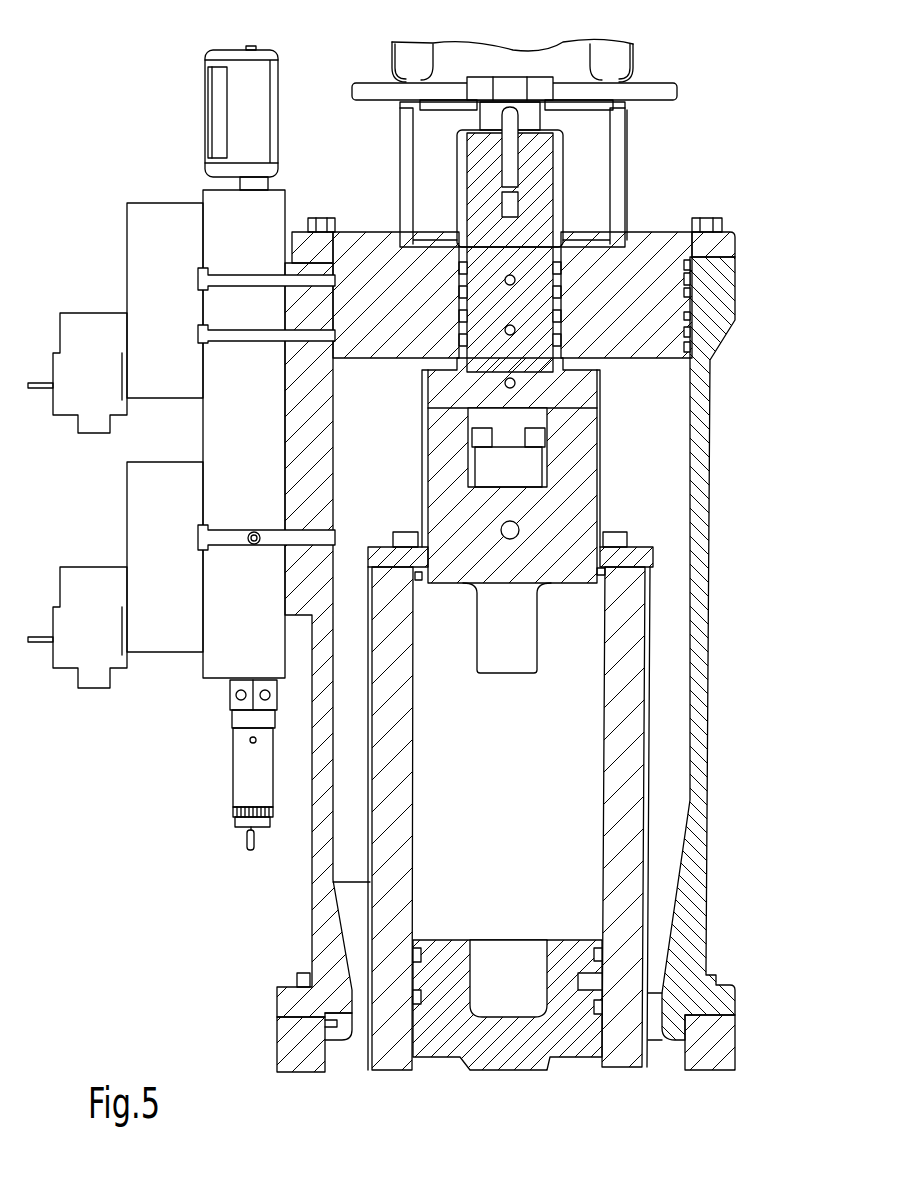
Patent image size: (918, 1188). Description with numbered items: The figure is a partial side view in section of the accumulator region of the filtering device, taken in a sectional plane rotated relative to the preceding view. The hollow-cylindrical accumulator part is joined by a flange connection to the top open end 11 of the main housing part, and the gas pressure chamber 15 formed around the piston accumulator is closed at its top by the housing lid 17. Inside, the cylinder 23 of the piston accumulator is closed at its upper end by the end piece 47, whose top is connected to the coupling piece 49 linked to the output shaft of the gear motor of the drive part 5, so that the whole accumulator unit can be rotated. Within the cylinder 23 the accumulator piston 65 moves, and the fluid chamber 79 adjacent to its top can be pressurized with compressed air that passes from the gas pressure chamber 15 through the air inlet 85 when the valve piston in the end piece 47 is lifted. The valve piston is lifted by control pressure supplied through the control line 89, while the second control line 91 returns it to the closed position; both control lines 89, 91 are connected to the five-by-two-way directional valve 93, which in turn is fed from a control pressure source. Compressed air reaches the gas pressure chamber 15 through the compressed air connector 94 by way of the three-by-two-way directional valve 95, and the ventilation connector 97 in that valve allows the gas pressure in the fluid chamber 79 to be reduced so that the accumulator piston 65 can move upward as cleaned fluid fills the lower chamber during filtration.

The drive part 5 is at (450, 70).
The coupling piece 49 is at (538, 172).
The housing lid 17 is at (658, 240).
The gas pressure chamber 15 is at (642, 432).
The end piece 47 is at (582, 472).
The air inlet 85 is at (517, 528).
The fluid chamber 79 is at (552, 652).
The cylinder 23 is at (627, 718).
The accumulator piston 65 is at (567, 957).
The top open end 11 is at (710, 1017).
The compressed air connector 94 is at (307, 538).
The 5/2-way valve 93 is at (155, 225).
The 3/2-way valve 95 is at (153, 512).
The second control line 91 is at (313, 280).
The control line 89 is at (300, 334).
The ventilation connector 97 is at (250, 530).